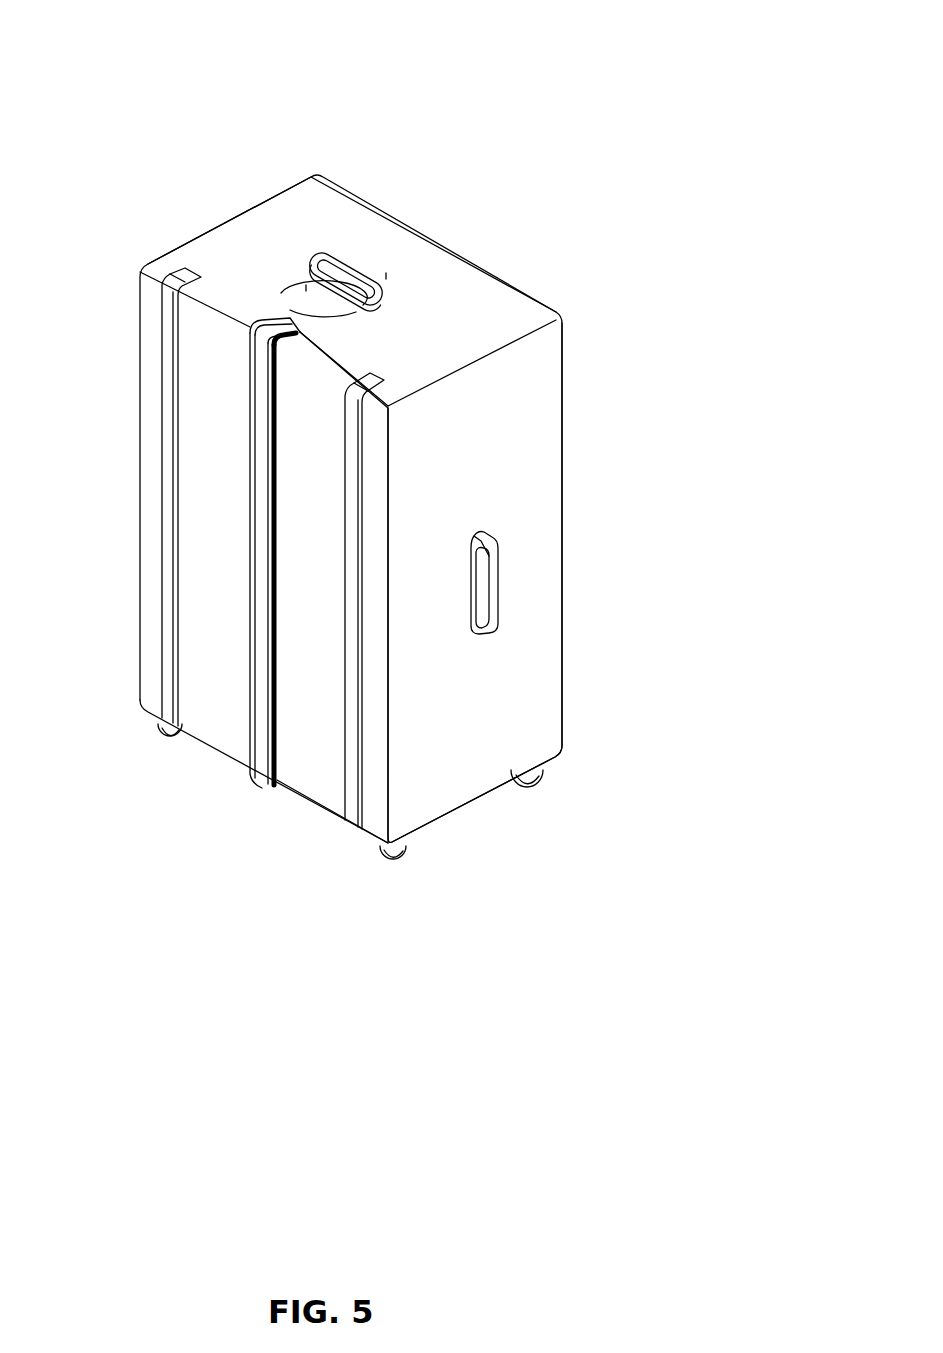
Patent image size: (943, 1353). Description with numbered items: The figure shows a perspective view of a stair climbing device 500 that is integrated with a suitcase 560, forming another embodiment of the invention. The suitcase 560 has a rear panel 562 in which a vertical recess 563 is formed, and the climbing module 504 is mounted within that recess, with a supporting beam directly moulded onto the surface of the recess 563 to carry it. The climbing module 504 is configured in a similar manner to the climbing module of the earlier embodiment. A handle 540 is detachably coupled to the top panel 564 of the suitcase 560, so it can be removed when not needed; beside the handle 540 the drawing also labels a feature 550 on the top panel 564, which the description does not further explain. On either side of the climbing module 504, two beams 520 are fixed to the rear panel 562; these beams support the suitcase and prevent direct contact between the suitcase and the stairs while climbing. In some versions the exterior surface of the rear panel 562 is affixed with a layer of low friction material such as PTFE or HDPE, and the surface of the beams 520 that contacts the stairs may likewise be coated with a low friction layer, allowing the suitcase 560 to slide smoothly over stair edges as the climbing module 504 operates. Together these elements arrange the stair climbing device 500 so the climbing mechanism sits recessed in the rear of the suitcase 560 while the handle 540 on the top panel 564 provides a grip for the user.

The stair climbing device 500 is at (352, 42).
The climbing module 504 is at (260, 758).
The beams 520 is at (170, 698).
The handle 540 is at (330, 302).
The handle recess 550 is at (287, 284).
The suitcase 560 is at (562, 578).
The rear panel 562 is at (305, 743).
The vertical recess 563 is at (286, 323).
The top panel 564 is at (458, 298).